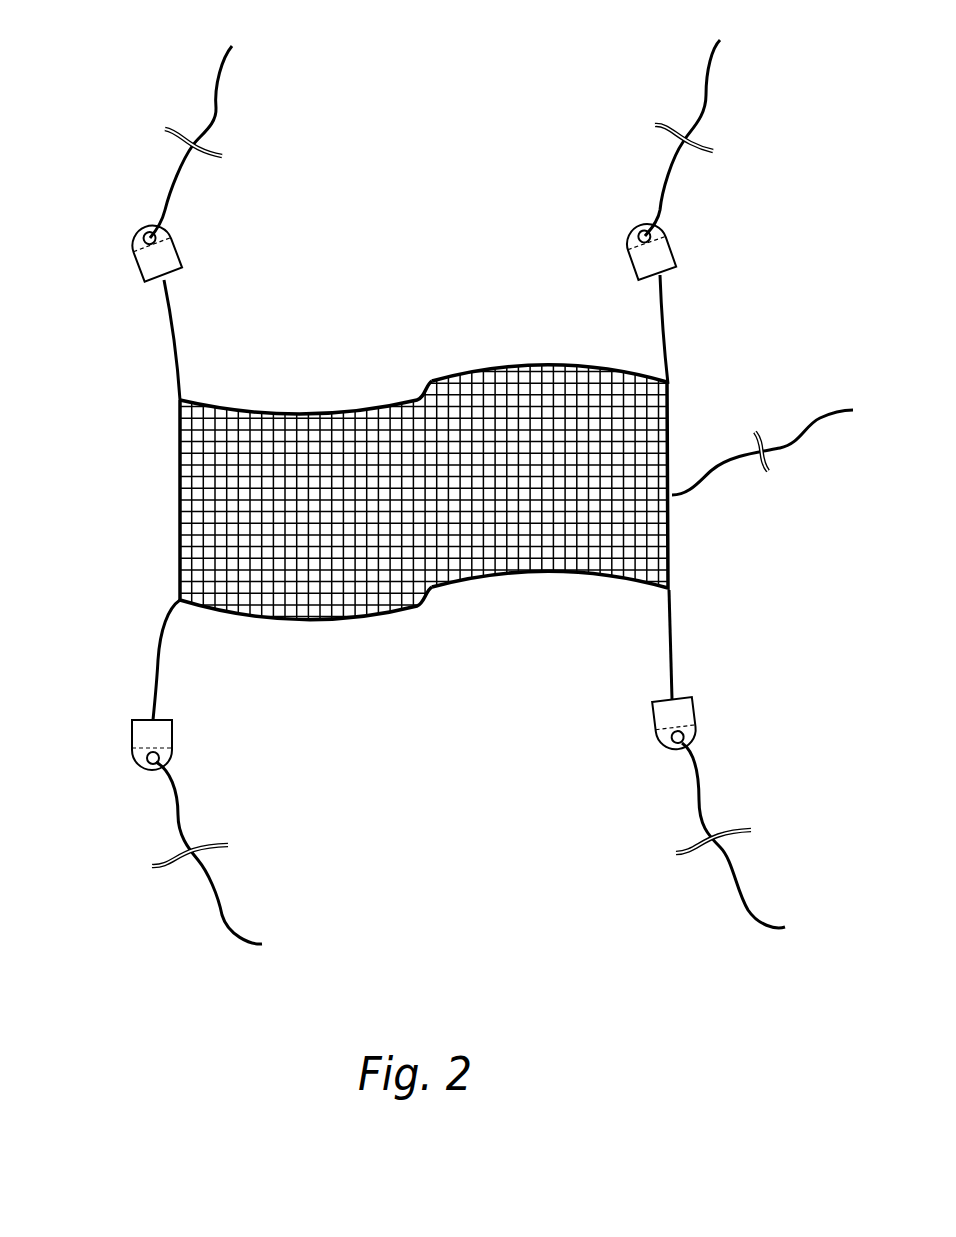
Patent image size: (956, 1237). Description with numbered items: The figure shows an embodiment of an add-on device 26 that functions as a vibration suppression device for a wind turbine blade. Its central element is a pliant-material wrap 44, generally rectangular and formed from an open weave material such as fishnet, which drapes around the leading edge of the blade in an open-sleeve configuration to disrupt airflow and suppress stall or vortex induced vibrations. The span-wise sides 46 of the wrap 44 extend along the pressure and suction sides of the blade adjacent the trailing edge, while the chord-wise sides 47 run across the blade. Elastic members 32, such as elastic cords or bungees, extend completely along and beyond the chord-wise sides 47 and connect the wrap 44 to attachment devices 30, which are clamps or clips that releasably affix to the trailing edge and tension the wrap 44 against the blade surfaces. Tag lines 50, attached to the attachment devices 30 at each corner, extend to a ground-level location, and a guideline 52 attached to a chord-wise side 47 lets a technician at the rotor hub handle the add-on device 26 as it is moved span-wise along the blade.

The add-on device 26 is at (90, 118).
The attachment device 30 is at (138, 266).
The elastic member 32 is at (172, 338).
The pliant-material wrap 44 is at (516, 388).
The span-wise side 46 is at (340, 413).
The chord-wise side 47 is at (270, 490).
The tag line 50 is at (215, 111).
The guideline 52 is at (707, 480).